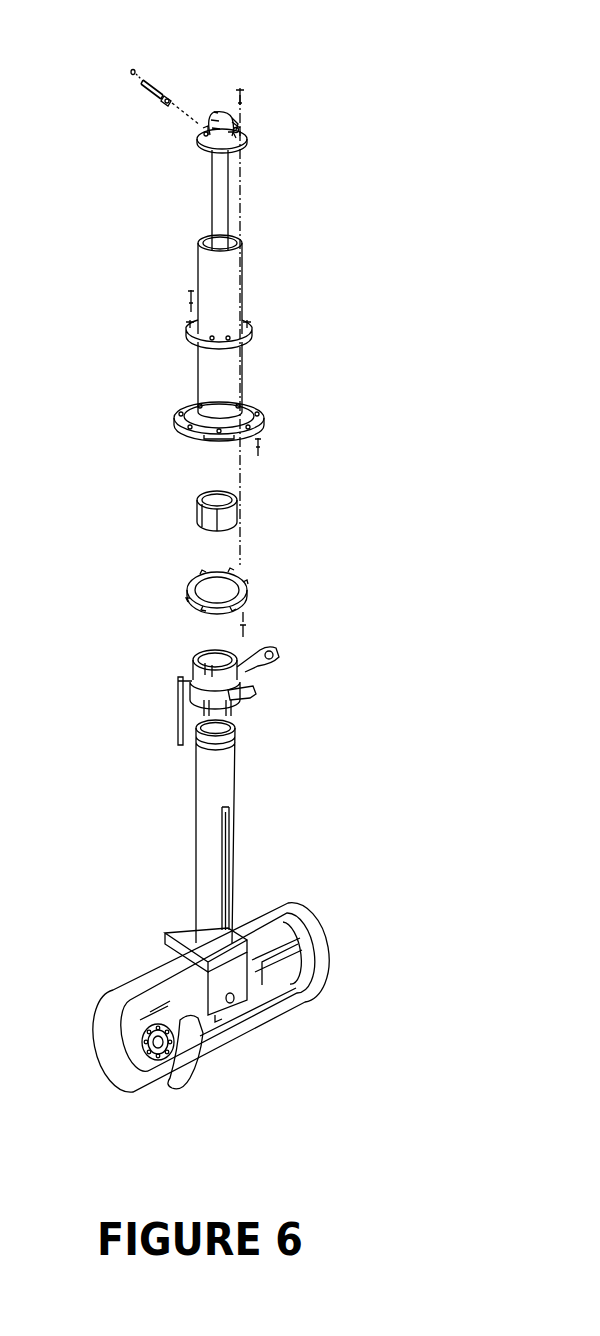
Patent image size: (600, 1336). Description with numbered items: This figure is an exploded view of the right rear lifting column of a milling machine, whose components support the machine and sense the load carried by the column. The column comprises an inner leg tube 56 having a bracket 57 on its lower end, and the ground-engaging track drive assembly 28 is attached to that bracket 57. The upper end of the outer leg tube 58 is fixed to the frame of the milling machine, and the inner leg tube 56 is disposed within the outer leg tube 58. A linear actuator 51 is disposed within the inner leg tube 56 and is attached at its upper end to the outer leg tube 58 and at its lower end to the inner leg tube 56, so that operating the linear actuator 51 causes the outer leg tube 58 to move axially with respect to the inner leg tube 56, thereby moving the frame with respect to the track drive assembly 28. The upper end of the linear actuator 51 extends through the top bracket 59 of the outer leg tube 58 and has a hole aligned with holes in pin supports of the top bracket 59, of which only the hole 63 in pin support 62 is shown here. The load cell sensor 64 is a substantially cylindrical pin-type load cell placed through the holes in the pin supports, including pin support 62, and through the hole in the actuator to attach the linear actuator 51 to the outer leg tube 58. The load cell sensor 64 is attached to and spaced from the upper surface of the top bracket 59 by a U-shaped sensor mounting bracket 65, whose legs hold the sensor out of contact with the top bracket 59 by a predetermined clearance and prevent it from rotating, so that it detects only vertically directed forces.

The ground-engaging track drive assembly 28 is at (336, 935).
The linear actuator 51 is at (222, 218).
The inner leg tube 56 is at (236, 780).
The bracket 57 is at (242, 932).
The outer leg tube 58 is at (232, 290).
The top bracket 59 is at (245, 138).
The pin support 62 is at (245, 100).
The hole 63 is at (238, 124).
The load cell sensor 64 is at (160, 88).
The sensor mounting bracket 65 is at (163, 110).